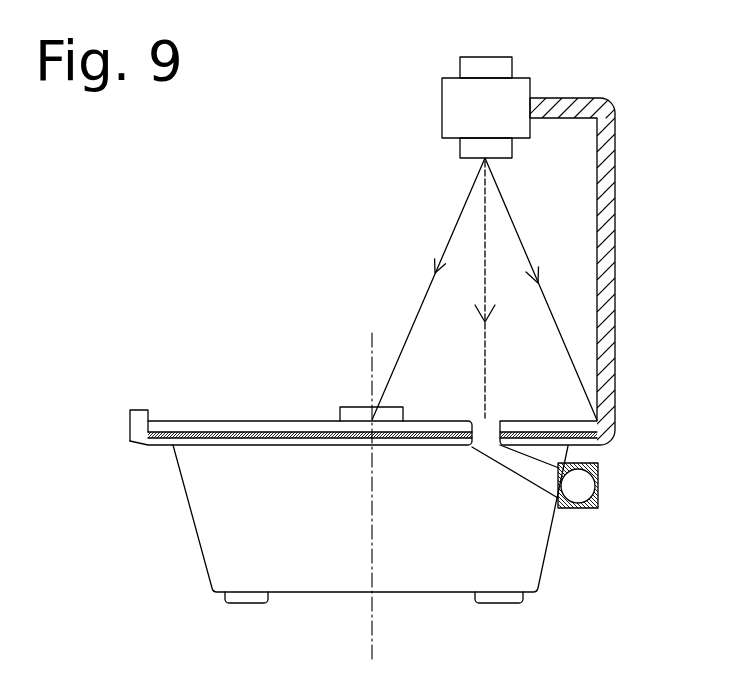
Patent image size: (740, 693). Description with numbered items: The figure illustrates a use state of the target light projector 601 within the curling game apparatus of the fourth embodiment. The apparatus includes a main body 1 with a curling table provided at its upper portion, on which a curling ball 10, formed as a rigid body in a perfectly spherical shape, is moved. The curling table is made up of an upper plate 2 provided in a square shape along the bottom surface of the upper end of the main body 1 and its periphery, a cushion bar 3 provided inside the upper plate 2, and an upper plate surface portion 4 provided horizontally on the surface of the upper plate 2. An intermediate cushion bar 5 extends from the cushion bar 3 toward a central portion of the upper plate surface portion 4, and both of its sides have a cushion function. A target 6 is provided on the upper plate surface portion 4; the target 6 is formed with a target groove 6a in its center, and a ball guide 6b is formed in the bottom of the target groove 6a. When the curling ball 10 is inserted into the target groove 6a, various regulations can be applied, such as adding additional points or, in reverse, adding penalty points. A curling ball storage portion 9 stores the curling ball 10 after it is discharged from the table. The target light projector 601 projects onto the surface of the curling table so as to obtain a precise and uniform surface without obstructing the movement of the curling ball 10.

The main body 1 is at (205, 527).
The upper plate 2 is at (141, 437).
The cushion bar 3 is at (129, 410).
The upper plate surface portion 4 is at (222, 422).
The intermediate cushion bar 5 is at (354, 405).
The target 6 is at (562, 421).
The target groove 6a is at (471, 443).
The ball guide 6b is at (517, 483).
The curling ball storage portion 9 is at (598, 504).
The curling ball 10 is at (581, 487).
The target light projector 601 is at (522, 80).